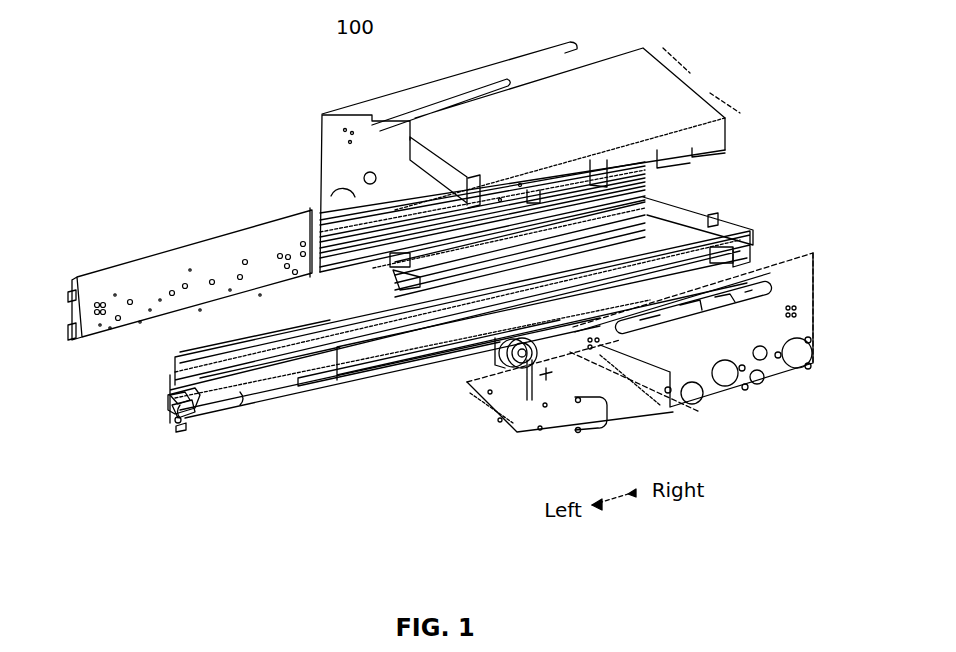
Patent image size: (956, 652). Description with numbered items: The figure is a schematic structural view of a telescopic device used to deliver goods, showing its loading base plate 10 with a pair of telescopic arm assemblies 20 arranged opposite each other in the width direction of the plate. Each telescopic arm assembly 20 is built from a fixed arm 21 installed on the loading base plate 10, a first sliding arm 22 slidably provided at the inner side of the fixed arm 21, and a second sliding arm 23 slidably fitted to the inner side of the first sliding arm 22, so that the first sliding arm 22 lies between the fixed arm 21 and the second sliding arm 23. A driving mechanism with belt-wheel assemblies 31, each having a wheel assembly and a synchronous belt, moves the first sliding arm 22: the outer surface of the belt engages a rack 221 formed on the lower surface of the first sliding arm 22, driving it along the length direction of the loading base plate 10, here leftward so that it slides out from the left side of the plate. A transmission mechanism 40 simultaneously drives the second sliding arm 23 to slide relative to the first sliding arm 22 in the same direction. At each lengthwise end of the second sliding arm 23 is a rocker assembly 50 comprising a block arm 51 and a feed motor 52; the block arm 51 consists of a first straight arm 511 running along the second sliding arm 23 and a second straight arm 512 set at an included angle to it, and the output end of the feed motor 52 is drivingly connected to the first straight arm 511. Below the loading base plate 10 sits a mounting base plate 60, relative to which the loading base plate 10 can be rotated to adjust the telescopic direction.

The loading base plate 10 is at (675, 103).
The telescopic arm assembly 20 is at (266, 207).
The fixed arm 21 is at (560, 393).
The first sliding arm 22 is at (408, 372).
The rack 221 is at (272, 357).
The second sliding arm 23 is at (298, 380).
The belt-wheel assembly 31 is at (728, 137).
The transmission mechanism 40 is at (615, 245).
The rocker assembly 50 is at (86, 390).
The block arm 51 is at (122, 415).
The first straight arm 511 is at (183, 428).
The second straight arm 512 is at (174, 421).
The feed motor 52 is at (172, 402).
The mounting base plate 60 is at (547, 423).